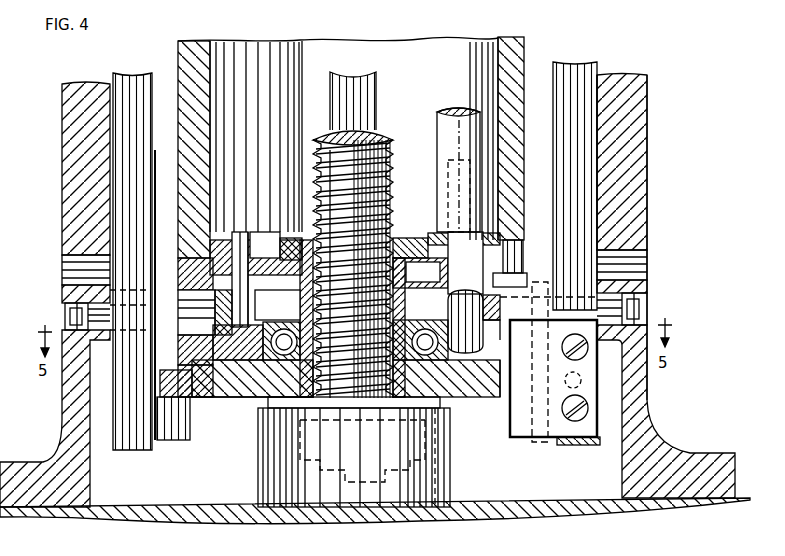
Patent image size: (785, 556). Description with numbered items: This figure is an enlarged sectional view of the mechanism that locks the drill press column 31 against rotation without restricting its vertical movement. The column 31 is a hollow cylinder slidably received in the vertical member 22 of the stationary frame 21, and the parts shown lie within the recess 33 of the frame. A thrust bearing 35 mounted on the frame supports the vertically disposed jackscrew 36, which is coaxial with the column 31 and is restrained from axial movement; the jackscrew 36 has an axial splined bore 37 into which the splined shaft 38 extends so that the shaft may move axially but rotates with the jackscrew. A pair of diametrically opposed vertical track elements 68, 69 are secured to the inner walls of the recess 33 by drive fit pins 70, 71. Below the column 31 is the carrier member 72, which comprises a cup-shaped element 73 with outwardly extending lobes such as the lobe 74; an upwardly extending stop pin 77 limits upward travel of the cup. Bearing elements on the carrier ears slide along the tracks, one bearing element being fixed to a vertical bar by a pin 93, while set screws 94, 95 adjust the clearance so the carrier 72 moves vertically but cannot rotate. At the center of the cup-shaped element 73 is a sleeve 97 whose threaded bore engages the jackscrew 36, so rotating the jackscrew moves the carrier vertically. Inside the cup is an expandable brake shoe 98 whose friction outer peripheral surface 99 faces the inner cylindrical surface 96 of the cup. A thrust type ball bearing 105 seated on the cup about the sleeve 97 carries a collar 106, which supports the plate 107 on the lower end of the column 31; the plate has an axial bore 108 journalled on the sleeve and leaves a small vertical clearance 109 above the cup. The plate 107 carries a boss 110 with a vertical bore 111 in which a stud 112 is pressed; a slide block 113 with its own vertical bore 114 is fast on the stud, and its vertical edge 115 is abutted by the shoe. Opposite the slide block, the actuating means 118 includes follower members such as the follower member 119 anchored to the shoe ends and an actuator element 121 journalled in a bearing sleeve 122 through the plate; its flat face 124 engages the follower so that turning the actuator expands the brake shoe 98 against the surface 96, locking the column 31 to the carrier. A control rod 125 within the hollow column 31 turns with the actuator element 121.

The stationary frame 21 is at (640, 218).
The vertical member 22 is at (612, 192).
The column 31 is at (180, 150).
The recess 33 is at (162, 125).
The thrust bearing 35 is at (432, 491).
The jackscrew 36 is at (387, 140).
The splined bore 37 is at (330, 170).
The splined shaft 38 is at (383, 88).
The track element 68 is at (120, 200).
The track element 69 is at (580, 140).
The drive fit pin 70 is at (95, 312).
The drive fit pin 71 is at (612, 307).
The carrier member 72 is at (233, 404).
The cup-shaped element 73 is at (198, 385).
The lobe 74 is at (168, 432).
The stop pin 77 is at (538, 288).
The pin 93 is at (580, 380).
The set screw 94 is at (582, 352).
The set screw 95 is at (582, 412).
The inner cylindrical surface 96 is at (195, 346).
The sleeve 97 is at (300, 238).
The brake shoe 98 is at (238, 342).
The outer peripheral surface 99 is at (215, 352).
The thrust type ball bearing 105 is at (283, 356).
The collar 106 is at (300, 306).
The plate 107 is at (195, 255).
The axial bore 108 is at (302, 274).
The vertical clearance 109 is at (195, 268).
The boss 110 is at (262, 245).
The vertical bore 111 is at (252, 262).
The stud 112 is at (238, 240).
The slide block 113 is at (200, 312).
The vertical bore 114 is at (216, 310).
The vertical edge 115 is at (192, 298).
The actuating means 118 is at (490, 298).
The follower member 119 is at (496, 385).
The actuator element 121 is at (465, 263).
The bearing sleeve 122 is at (492, 276).
The flat face 124 is at (467, 348).
The control rod 125 is at (473, 140).